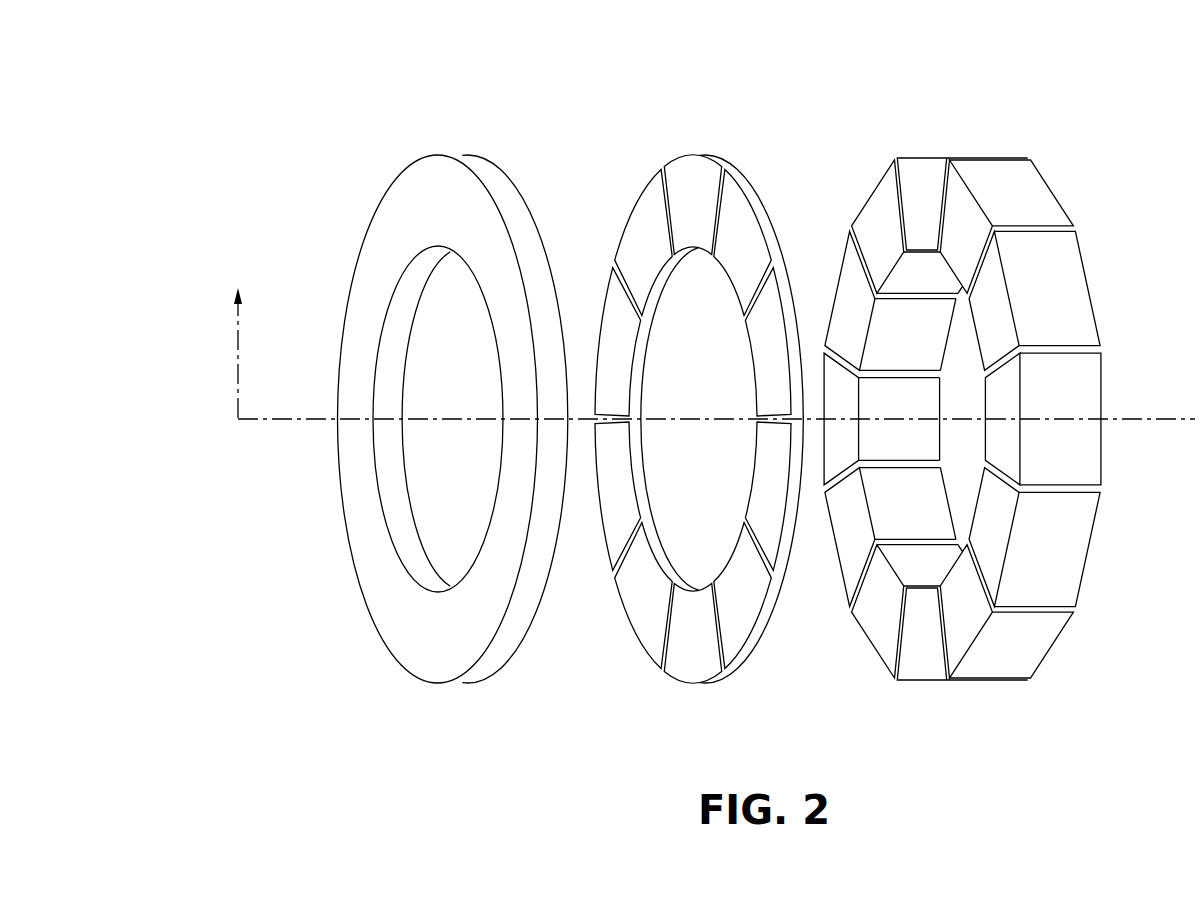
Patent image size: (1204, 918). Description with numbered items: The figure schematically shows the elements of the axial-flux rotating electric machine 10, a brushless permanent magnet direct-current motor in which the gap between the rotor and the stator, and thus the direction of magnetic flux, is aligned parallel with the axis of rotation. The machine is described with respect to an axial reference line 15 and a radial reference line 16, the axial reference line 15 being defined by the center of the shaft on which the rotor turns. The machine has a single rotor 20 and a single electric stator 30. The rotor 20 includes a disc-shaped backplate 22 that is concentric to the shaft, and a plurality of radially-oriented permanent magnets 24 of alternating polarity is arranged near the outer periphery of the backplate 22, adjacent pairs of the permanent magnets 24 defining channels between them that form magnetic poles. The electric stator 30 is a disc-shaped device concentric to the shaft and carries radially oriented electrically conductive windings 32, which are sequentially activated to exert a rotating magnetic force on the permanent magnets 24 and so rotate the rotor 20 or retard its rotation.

The axial-flux rotating electric machine 10 is at (273, 105).
The axial reference line 15 is at (292, 421).
The radial reference line 16 is at (238, 355).
The rotor 20 is at (757, 90).
The disc-shaped backplate 22 is at (381, 254).
The permanent magnets 24 is at (775, 313).
The electric stator 30 is at (975, 398).
The radially oriented electrically conductive windings 32 is at (1067, 277).